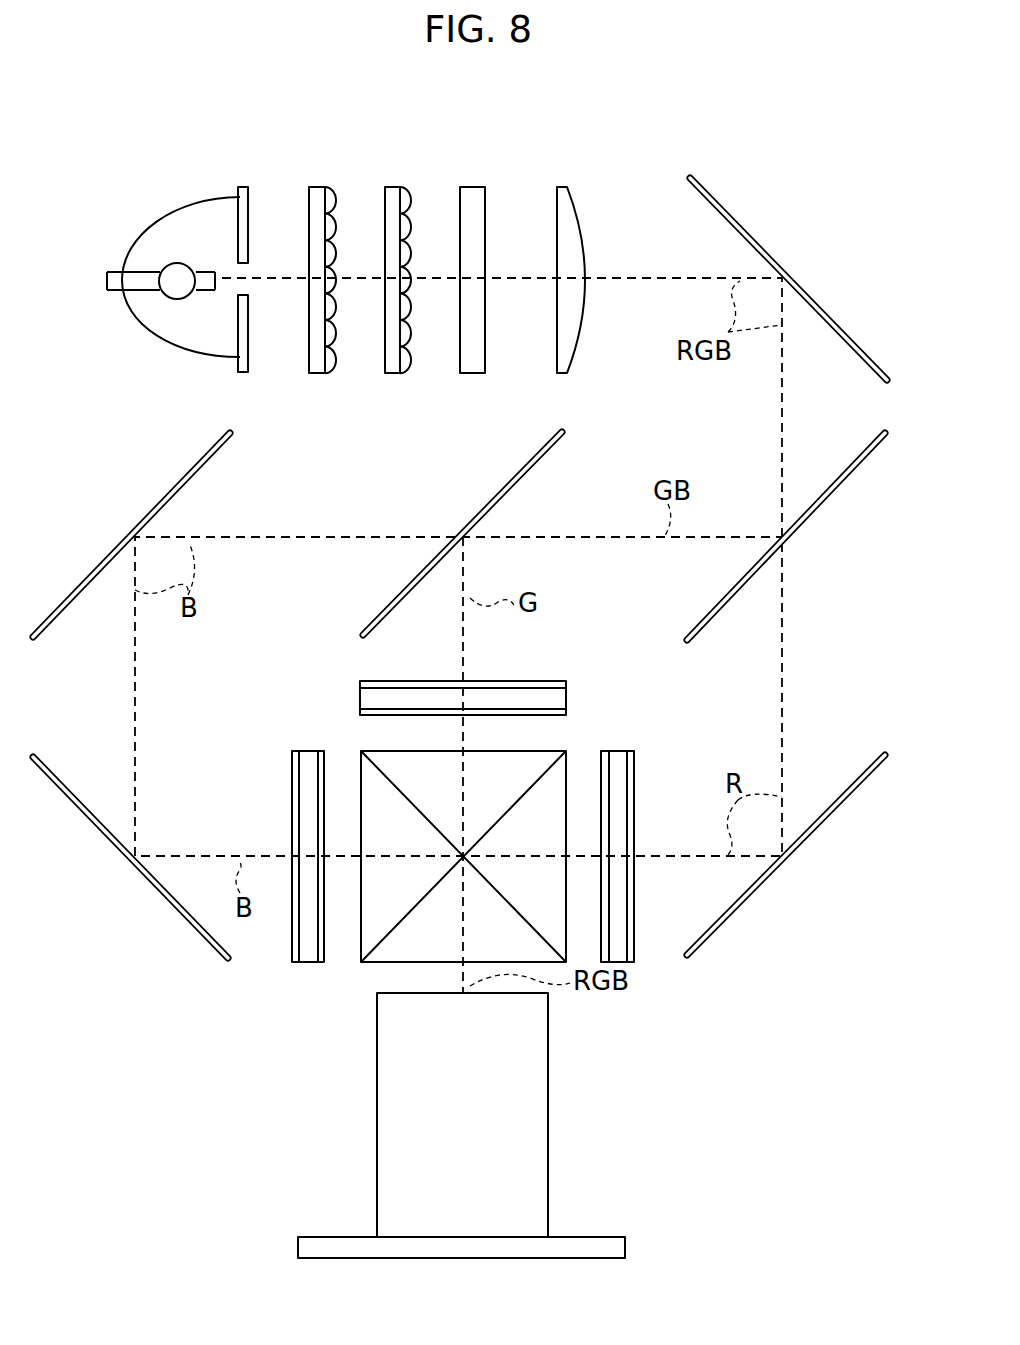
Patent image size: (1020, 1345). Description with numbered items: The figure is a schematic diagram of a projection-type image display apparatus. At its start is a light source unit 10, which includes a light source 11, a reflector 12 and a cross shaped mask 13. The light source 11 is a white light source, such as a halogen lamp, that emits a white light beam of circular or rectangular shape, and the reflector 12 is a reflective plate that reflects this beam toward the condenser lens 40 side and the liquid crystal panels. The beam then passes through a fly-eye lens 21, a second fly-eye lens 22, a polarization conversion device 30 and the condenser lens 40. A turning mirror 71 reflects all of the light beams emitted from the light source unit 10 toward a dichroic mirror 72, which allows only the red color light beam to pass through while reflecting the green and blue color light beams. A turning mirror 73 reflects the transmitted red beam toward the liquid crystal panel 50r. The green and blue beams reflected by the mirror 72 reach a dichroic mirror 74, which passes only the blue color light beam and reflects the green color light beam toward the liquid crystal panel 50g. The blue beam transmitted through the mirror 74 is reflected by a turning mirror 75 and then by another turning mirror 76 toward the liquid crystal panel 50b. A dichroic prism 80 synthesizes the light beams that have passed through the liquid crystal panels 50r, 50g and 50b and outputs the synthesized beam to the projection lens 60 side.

The light source unit 10 is at (167, 248).
The light source 11 is at (178, 287).
The reflector 12 is at (150, 228).
The cross shaped mask 13 is at (242, 187).
The fly-eye lens 21 is at (318, 187).
The fly-eye lens 22 is at (392, 187).
The polarization conversion device 30 is at (470, 187).
The condenser lens 40 is at (562, 187).
The liquid crystal panel 50b is at (303, 772).
The liquid crystal panel 50g is at (540, 690).
The liquid crystal panel 50r is at (620, 755).
The projection lens 60 is at (530, 1095).
The mirror 71 is at (752, 231).
The mirror 72 is at (832, 500).
The mirror 73 is at (823, 827).
The mirror 74 is at (532, 466).
The mirror 75 is at (153, 510).
The mirror 76 is at (110, 845).
The dichroic prism 80 is at (552, 751).